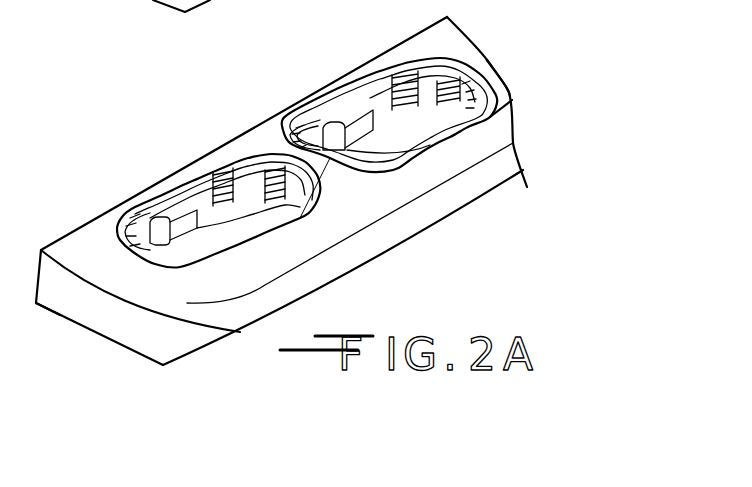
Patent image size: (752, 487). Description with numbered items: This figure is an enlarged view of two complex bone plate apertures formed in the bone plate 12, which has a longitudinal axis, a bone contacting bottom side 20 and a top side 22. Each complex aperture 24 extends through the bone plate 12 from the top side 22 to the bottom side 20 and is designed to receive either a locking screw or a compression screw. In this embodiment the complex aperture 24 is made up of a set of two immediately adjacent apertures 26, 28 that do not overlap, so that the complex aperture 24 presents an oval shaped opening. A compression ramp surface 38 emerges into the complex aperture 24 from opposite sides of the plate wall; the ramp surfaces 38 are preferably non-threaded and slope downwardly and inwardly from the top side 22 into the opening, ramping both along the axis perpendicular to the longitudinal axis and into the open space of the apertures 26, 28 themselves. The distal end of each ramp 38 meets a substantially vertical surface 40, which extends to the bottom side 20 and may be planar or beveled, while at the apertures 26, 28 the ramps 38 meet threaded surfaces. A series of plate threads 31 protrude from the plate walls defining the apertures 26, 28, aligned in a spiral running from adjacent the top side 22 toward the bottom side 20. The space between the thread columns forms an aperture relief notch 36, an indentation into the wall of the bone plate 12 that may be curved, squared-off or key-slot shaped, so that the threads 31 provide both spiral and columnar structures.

The bone plate 12 is at (447, 215).
The bone contacting bottom side 20 is at (93, 331).
The top side 22 is at (480, 143).
The complex aperture 24 is at (440, 66).
The aperture 26 is at (213, 157).
The aperture 28 is at (343, 158).
The plate threads 31 is at (248, 218).
The aperture relief notch 36 is at (233, 168).
The compression ramp surface 38 is at (173, 207).
The vertical surface 40 is at (178, 233).